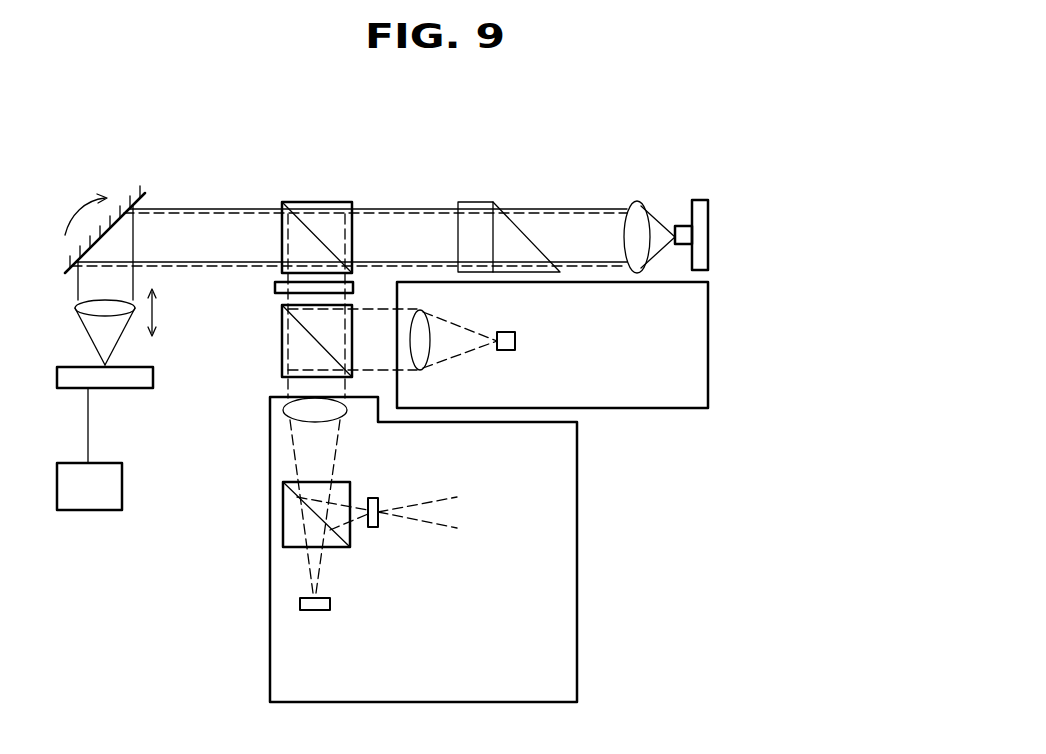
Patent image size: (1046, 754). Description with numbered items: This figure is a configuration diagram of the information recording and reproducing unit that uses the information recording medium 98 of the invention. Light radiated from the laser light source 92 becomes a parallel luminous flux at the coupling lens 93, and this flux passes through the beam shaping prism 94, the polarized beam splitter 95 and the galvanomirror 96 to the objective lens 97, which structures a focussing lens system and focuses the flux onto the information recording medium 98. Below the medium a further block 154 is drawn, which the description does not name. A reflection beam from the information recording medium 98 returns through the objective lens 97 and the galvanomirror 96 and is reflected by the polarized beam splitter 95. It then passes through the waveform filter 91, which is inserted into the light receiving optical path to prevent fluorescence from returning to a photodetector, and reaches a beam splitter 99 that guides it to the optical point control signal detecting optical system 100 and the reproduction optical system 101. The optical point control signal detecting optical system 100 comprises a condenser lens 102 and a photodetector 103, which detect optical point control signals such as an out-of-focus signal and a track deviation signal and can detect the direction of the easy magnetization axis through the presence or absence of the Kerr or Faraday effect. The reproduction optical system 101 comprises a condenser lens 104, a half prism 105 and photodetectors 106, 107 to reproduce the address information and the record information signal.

The waveform filter 91 is at (276, 289).
The laser light source 92 is at (710, 200).
The coupling lens 93 is at (637, 201).
The beam shaping prism 94 is at (478, 201).
The polarized beam splitter 95 is at (307, 201).
The galvanomirror 96 is at (113, 197).
The objective lens 97 is at (80, 307).
The information recording medium 98 is at (113, 389).
The beam splitter 99 is at (282, 358).
The optical point control signal detecting optical system 100 is at (697, 317).
The reproduction optical system 101 is at (570, 603).
The condenser lens 102 is at (426, 312).
The photodetector 103 is at (515, 341).
The condenser lens 104 is at (285, 412).
The half prism 105 is at (355, 481).
The photodetector 106 is at (378, 522).
The photodetector 107 is at (316, 612).
The drive unit 154 is at (78, 511).